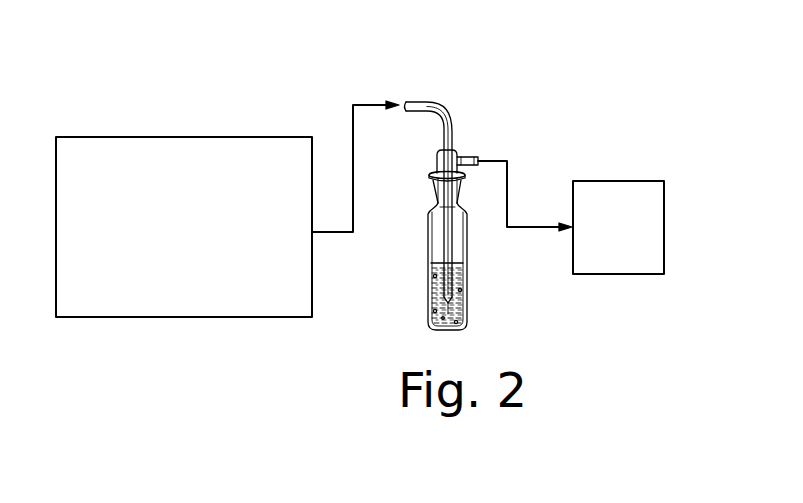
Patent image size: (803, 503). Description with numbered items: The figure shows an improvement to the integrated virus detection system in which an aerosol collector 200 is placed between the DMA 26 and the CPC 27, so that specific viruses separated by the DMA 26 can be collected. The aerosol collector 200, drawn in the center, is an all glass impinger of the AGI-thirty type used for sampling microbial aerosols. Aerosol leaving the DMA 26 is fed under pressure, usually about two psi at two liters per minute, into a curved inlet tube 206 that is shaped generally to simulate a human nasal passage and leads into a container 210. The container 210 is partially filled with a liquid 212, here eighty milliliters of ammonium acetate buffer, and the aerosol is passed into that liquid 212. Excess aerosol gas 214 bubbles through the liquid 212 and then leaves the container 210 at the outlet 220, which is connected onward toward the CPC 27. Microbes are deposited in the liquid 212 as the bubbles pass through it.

The DMA 26 is at (161, 246).
The CPC 27 is at (630, 242).
The aerosol collector 200 is at (515, 103).
The curved inlet tube 206 is at (431, 103).
The outlet 220 is at (478, 158).
The container 210 is at (468, 235).
The liquid 212 is at (468, 286).
The excess aerosol gas 214 is at (427, 306).